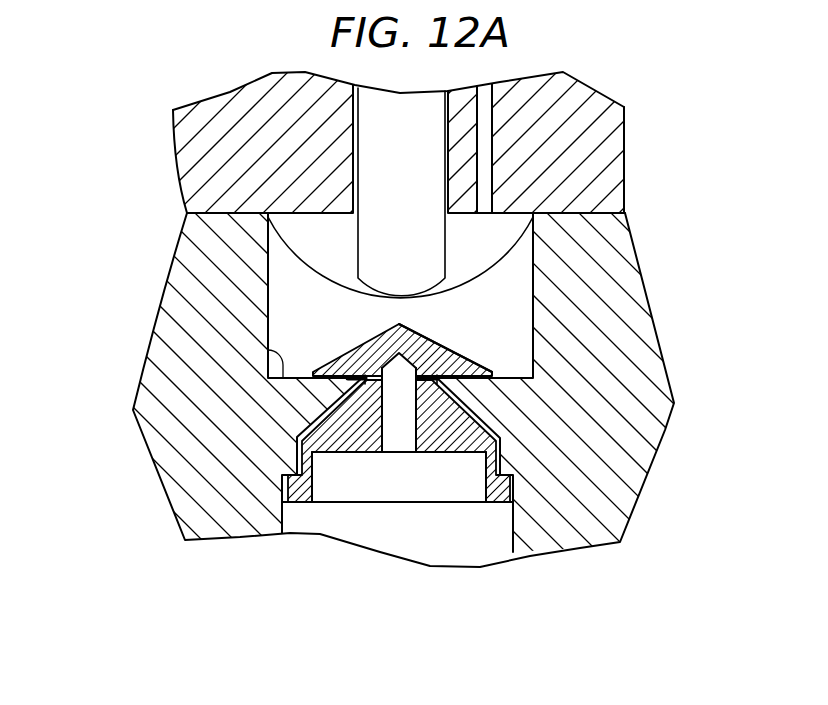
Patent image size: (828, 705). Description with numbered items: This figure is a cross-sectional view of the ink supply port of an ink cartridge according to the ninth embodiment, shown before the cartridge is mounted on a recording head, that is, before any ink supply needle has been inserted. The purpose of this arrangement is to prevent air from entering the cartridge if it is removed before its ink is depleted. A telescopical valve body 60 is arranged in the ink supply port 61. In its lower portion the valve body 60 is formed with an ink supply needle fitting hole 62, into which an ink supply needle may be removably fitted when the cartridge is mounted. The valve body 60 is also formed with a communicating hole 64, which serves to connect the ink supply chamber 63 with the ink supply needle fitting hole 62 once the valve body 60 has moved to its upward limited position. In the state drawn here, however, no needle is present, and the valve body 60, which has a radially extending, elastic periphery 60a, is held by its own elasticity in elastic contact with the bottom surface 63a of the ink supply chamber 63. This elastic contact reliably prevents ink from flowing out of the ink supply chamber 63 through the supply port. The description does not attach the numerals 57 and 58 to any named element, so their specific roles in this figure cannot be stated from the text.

The valve chamber 57 is at (268, 283).
The inlet passage 58 is at (430, 118).
The telescopical valve body 60 is at (493, 373).
The elastic periphery 60a is at (468, 357).
The ink supply port 61 is at (345, 393).
The ink supply needle fitting hole 62 is at (393, 440).
The ink supply chamber 63 is at (512, 283).
The bottom surface 63a is at (267, 349).
The communicating hole 64 is at (440, 382).